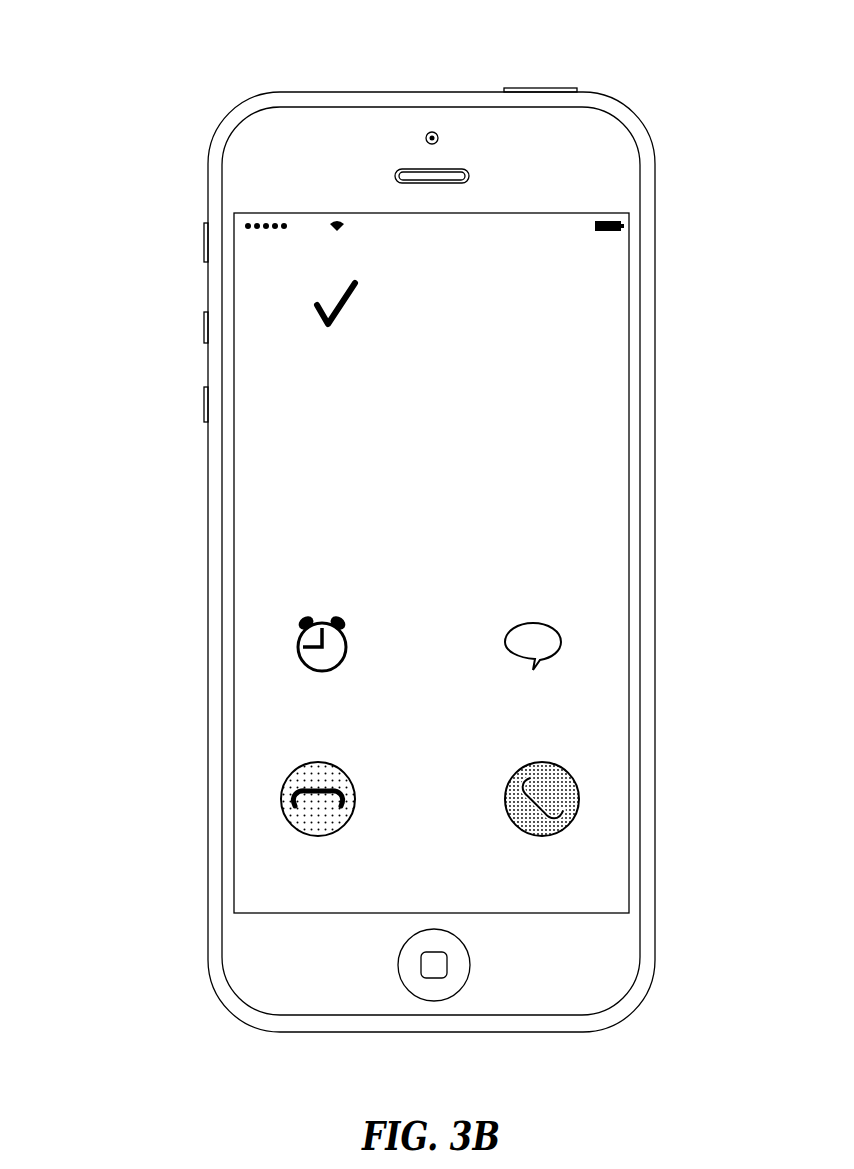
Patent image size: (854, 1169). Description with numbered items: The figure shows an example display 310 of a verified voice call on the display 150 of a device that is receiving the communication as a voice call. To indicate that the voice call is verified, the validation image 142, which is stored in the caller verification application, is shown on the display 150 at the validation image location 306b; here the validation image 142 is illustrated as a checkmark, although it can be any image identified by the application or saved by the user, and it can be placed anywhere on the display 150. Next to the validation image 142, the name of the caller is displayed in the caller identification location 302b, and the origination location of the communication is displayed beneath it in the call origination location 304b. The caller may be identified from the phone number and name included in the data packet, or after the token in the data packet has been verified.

The display 310 is at (158, 85).
The display 150 is at (231, 608).
The validation image 142 is at (337, 292).
The validation image location 306b is at (302, 308).
The caller identification location 302b is at (524, 304).
The call origination location 304b is at (534, 357).